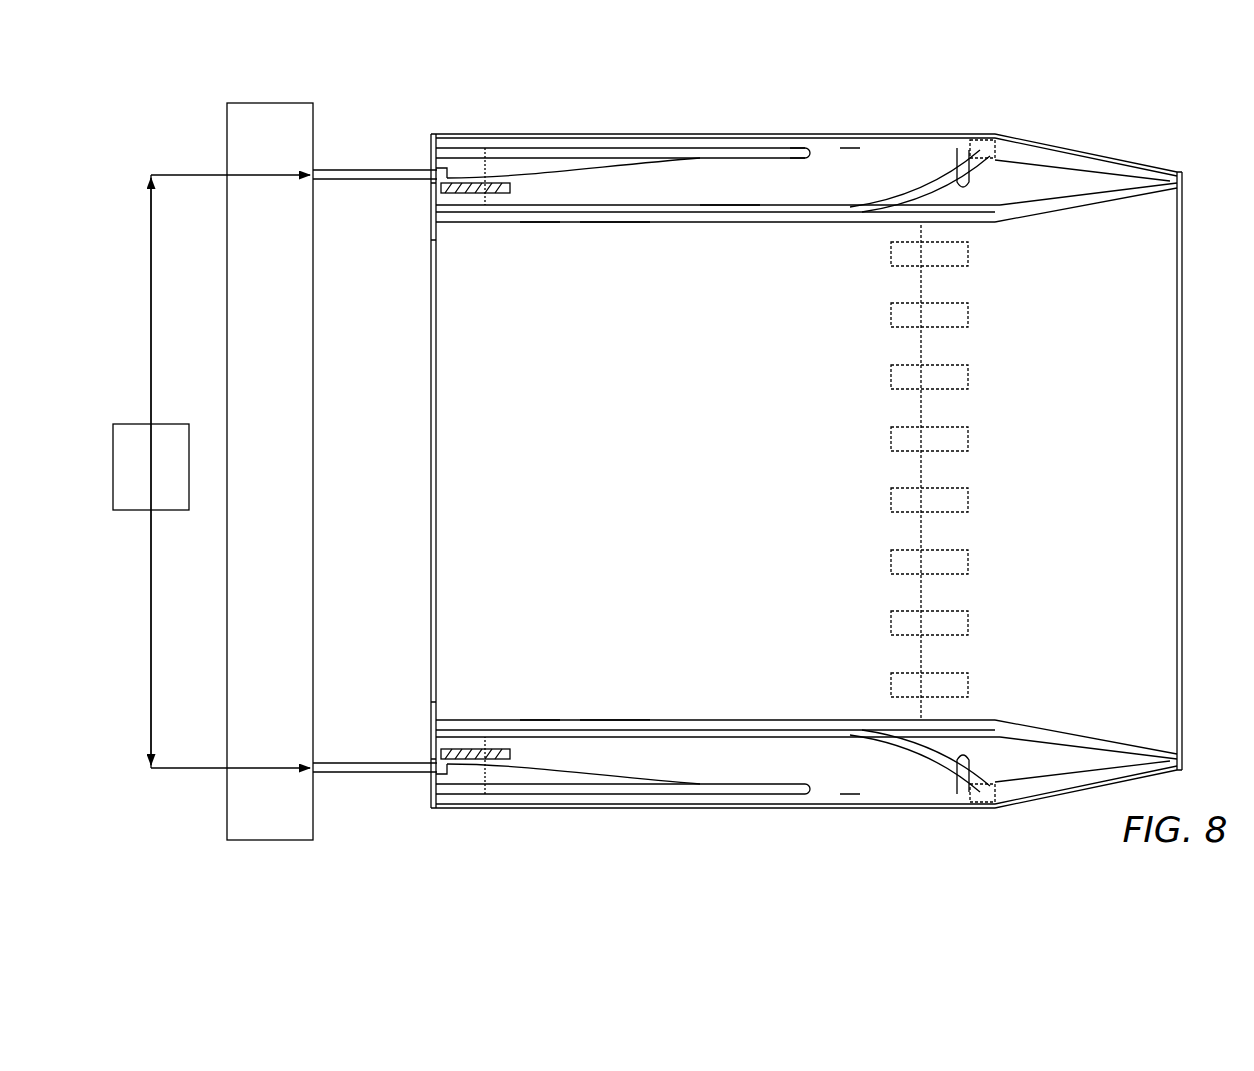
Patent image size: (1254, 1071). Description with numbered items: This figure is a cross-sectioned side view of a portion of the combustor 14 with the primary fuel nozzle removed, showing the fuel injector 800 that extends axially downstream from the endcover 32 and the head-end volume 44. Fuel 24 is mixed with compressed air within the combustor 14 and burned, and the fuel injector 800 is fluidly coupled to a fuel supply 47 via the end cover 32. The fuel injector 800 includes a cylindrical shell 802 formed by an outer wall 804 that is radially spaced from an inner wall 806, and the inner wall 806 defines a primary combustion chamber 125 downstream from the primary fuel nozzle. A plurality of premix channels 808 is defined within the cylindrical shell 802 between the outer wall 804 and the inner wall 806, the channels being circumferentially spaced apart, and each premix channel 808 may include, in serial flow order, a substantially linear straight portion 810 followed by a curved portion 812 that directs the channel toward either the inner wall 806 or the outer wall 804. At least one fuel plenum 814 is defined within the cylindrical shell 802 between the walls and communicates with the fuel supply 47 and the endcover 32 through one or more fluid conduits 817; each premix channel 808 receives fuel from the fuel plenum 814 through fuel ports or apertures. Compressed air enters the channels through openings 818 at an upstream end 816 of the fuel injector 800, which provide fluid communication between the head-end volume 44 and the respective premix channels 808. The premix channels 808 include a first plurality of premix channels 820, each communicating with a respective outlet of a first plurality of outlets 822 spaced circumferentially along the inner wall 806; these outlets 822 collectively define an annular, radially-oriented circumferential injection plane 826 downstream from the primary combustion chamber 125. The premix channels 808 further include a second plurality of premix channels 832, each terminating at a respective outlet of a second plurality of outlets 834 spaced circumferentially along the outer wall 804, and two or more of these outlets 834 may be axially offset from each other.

The combustor 14 is at (1143, 78).
The fuel 24 is at (151, 278).
The endcover 32 is at (227, 540).
The head-end volume 44 is at (355, 472).
The fuel supply 47 is at (139, 478).
The primary combustion chamber 125 is at (600, 472).
The fuel injector 800 is at (552, 93).
The cylindrical shell 802 is at (541, 228).
The outer wall 804 is at (617, 133).
The inner wall 806 is at (612, 223).
The premix channels 808 is at (700, 139).
The straight portion 810 is at (735, 197).
The curved portion 812 is at (923, 163).
The fuel plenum 814 is at (504, 176).
The upstream end 816 is at (428, 252).
The fluid conduits 817 is at (437, 170).
The openings 818 is at (433, 194).
The first plurality of premix channels 820 is at (982, 186).
The first plurality of outlets 822 is at (968, 439).
The injection plane 826 is at (915, 412).
The second plurality of premix channels 832 is at (912, 197).
The second plurality of outlets 834 is at (851, 160).